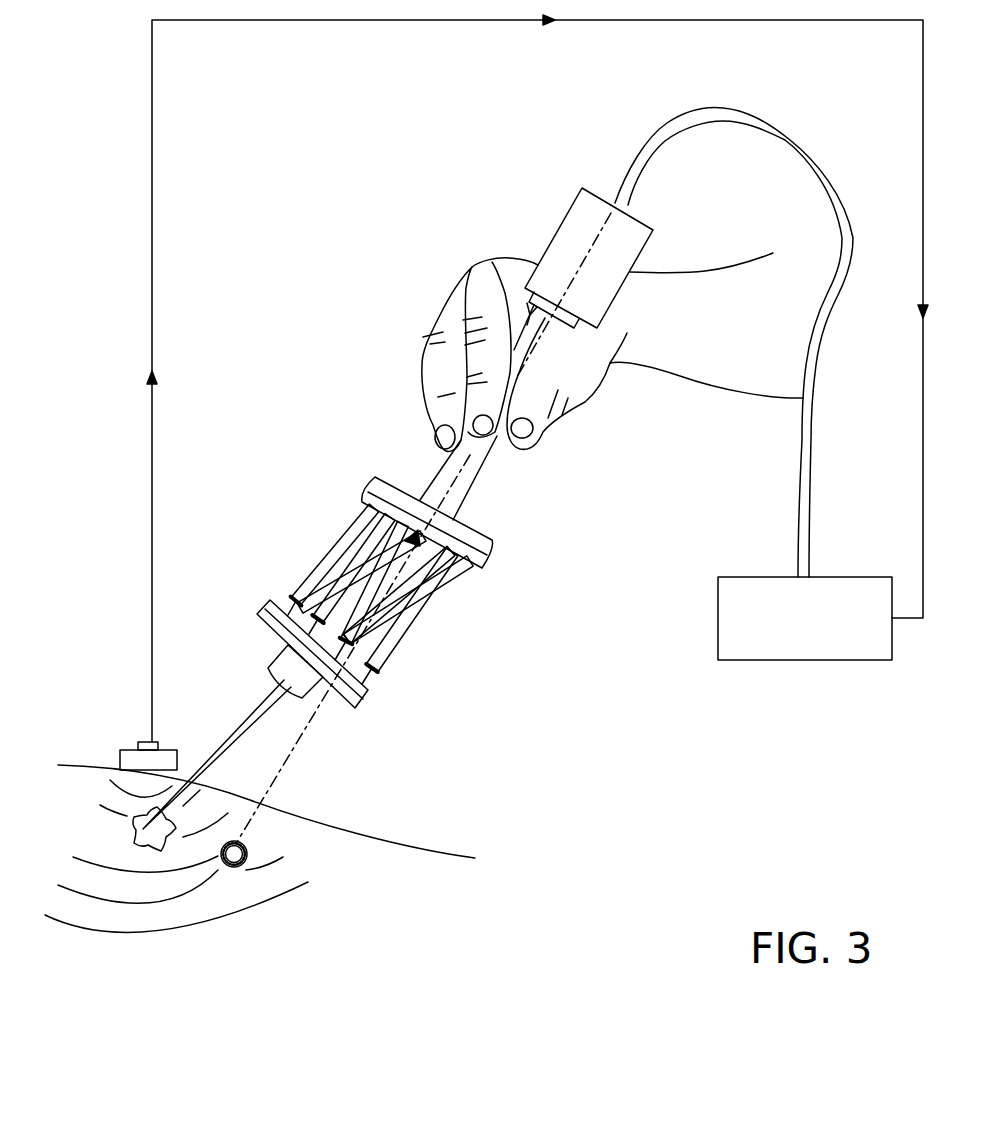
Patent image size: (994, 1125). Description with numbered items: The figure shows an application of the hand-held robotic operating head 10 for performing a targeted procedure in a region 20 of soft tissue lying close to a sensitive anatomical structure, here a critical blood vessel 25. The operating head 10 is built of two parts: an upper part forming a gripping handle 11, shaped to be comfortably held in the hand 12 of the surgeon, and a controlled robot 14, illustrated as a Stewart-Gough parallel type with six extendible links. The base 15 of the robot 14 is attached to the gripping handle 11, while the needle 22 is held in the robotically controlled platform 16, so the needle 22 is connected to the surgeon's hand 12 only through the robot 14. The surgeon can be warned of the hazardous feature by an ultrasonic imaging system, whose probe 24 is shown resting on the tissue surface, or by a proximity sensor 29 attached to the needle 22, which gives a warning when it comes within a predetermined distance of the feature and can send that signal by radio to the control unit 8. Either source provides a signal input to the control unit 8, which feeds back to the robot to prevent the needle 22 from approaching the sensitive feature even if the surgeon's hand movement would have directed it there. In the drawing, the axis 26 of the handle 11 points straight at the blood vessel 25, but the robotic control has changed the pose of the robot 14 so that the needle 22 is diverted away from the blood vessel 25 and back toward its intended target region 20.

The control unit 8 is at (718, 620).
The hand held robotic operating head 10 is at (317, 512).
The gripping handle 11 is at (477, 485).
The hand 12 is at (525, 258).
The controlled robot 14 is at (435, 617).
The base 15 is at (487, 555).
The robotically controlled platform 16 is at (357, 703).
The region 20 is at (137, 848).
The needle 22 is at (264, 690).
The probe 24 is at (125, 747).
The blood vessel 25 is at (220, 866).
The axis 26 is at (254, 816).
The proximity sensor 29 is at (190, 805).